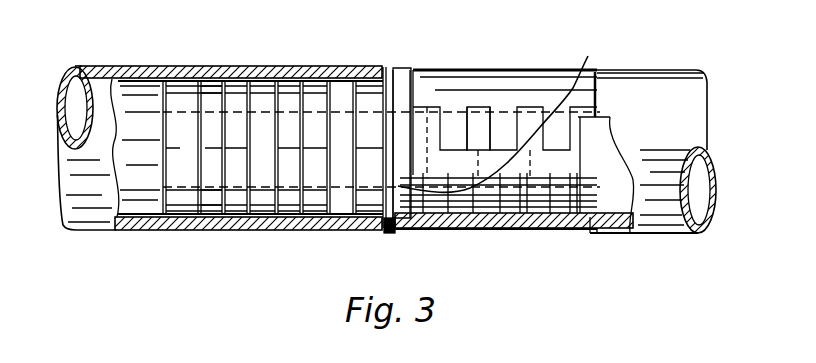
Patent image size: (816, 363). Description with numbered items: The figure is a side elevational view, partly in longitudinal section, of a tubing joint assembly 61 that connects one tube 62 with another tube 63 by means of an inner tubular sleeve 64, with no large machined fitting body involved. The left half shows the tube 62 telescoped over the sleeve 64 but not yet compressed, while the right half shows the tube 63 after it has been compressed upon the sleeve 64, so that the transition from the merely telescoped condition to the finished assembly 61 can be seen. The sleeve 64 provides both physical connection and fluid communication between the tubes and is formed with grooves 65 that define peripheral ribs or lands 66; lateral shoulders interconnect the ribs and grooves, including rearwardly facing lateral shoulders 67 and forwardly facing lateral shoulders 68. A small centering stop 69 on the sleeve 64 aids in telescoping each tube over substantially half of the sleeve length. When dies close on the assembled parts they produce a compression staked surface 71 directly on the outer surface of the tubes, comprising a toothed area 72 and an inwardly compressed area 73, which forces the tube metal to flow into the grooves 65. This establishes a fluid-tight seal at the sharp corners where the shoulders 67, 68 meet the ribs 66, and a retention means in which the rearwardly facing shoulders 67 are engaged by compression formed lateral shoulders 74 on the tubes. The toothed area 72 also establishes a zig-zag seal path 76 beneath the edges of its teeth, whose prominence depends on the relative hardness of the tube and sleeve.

The tubing joint assembly 61 is at (560, 62).
The tube 62 is at (197, 88).
The tube 63 is at (642, 70).
The sleeve 64 is at (160, 204).
The grooves 65 is at (262, 97).
The peripheral ribs 66 is at (240, 200).
The rearwardly facing lateral shoulders 67 is at (284, 95).
The forwardly facing lateral shoulders 68 is at (321, 201).
The centering stop 69 is at (388, 234).
The compression staked surface 71 is at (570, 101).
The toothed area 72 is at (480, 113).
The inwardly compressed area 73 is at (498, 72).
The compression formed lateral shoulders 74 is at (470, 227).
The zig-zag seal path 76 is at (557, 98).